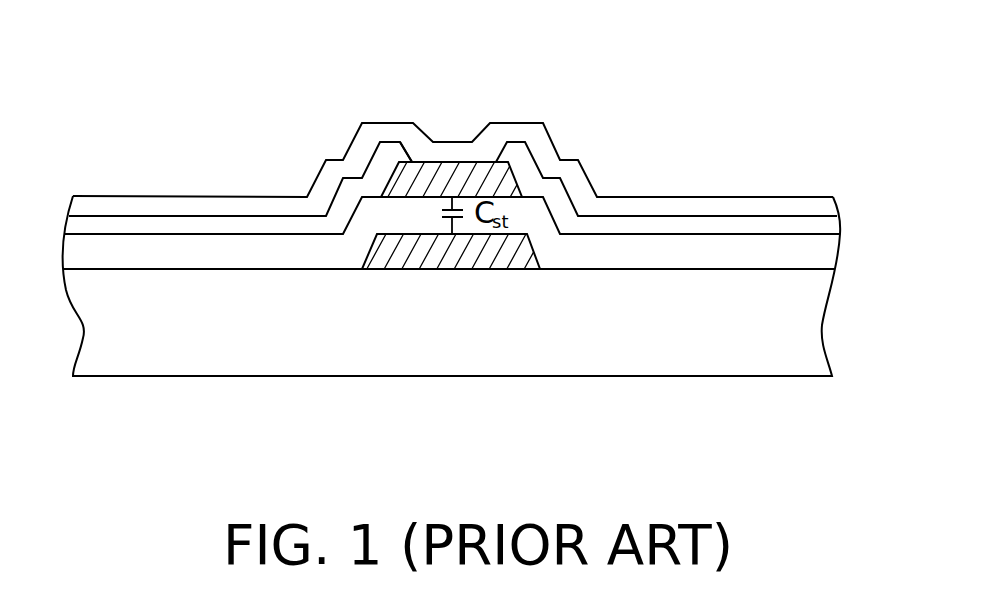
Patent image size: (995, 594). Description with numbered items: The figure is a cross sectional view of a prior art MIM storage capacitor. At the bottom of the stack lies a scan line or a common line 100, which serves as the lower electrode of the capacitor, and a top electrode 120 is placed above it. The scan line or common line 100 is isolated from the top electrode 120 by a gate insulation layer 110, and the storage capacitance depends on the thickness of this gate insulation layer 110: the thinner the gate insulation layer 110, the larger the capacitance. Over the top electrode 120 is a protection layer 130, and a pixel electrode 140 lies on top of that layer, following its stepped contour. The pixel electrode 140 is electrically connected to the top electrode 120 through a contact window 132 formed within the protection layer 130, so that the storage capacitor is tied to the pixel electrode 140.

The scan line or common line 100 is at (475, 257).
The gate insulation layer 110 is at (825, 258).
The top electrode 120 is at (467, 178).
The protection layer 130 is at (825, 226).
The contact window 132 is at (407, 153).
The pixel electrode 140 is at (543, 150).